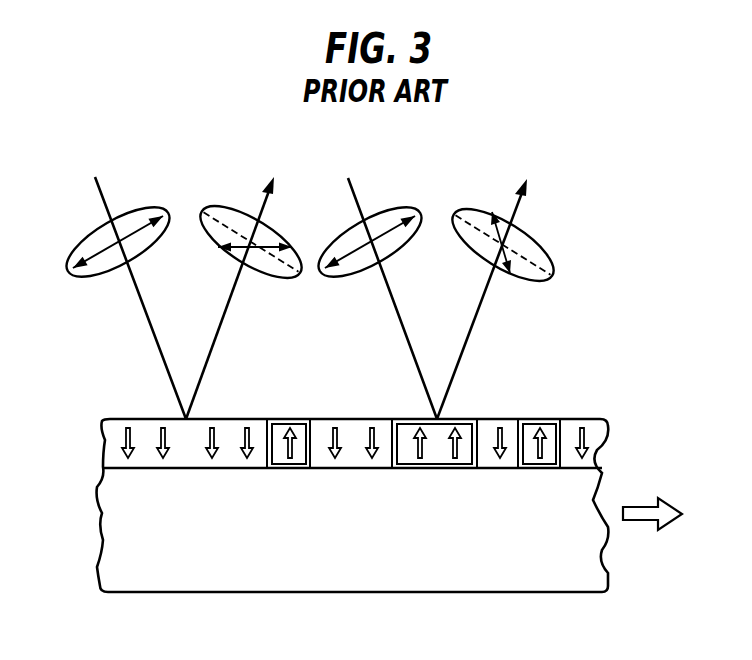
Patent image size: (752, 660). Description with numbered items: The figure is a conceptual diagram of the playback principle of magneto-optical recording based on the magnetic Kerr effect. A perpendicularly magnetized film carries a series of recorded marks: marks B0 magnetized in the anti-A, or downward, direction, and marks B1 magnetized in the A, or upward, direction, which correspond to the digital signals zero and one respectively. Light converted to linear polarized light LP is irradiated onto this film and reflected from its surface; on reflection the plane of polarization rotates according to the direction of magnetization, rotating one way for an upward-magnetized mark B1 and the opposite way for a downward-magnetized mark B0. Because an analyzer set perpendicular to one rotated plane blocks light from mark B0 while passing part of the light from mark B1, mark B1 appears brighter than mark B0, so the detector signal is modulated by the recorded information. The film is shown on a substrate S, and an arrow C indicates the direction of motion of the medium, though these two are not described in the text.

The linear polarized light LP is at (247, 281).
The mark B0 is at (587, 414).
The mark B1 is at (542, 414).
The direction of medium movement C is at (664, 517).
The substrate S is at (497, 573).